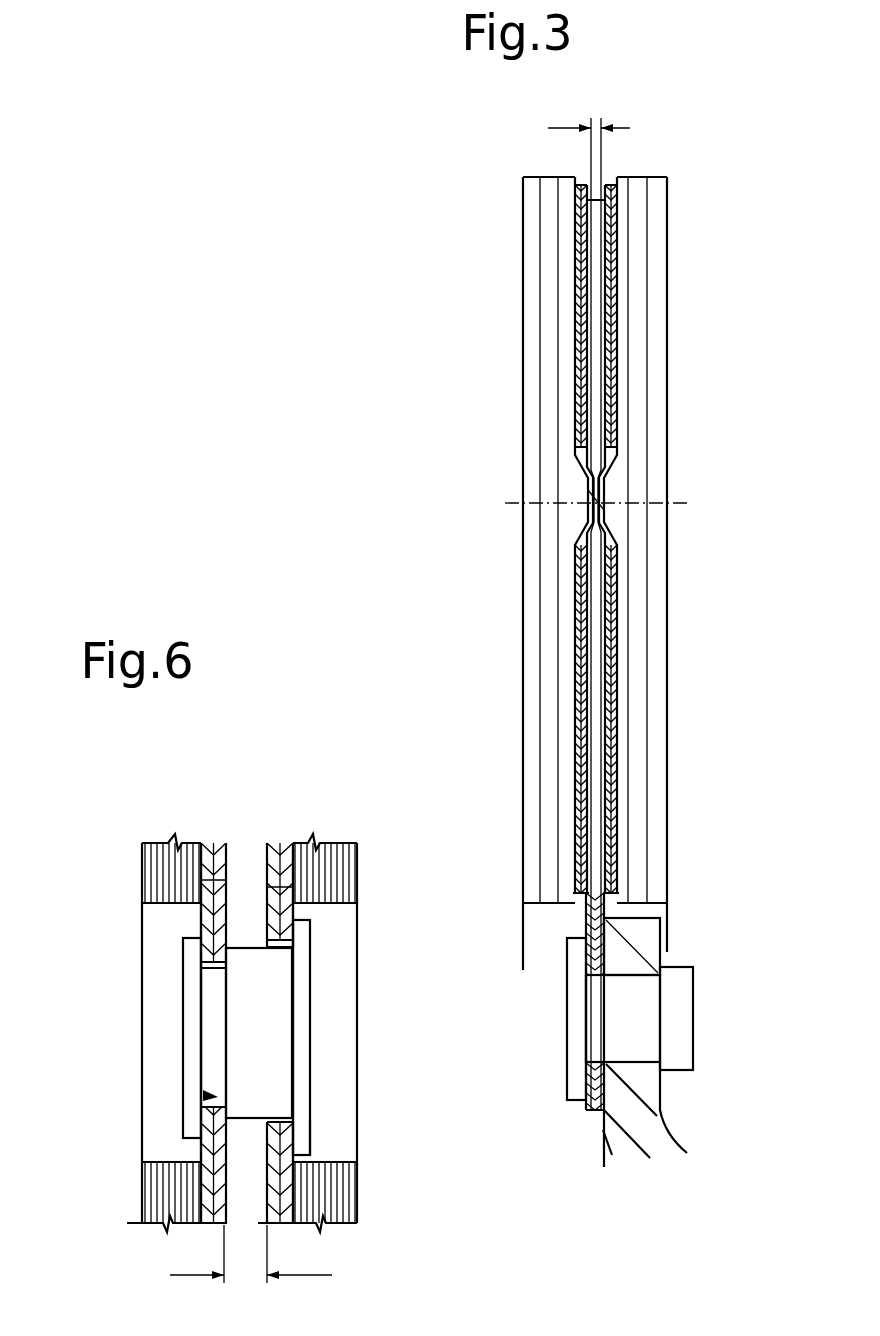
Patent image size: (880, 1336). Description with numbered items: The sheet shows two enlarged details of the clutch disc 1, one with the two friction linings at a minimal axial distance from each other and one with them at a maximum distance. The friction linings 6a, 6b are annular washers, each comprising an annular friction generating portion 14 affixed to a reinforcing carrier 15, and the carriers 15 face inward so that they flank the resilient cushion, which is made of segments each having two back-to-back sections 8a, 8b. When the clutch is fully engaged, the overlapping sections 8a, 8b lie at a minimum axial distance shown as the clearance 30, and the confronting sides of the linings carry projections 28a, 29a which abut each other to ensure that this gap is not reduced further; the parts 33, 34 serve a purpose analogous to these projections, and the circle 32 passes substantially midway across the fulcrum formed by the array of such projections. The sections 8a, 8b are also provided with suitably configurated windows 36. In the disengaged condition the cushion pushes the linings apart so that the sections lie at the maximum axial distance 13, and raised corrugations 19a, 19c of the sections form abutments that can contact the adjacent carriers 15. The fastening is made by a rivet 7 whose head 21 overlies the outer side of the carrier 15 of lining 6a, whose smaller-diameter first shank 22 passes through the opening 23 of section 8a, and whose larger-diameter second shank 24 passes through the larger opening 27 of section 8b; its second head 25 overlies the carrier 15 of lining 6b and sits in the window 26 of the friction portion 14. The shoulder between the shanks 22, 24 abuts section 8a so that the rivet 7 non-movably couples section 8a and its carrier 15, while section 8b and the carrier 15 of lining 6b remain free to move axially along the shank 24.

In FIG. 6, the clutch disc 1 is at (265, 752).
In FIG. 3, the friction lining 6a is at (532, 320).
In FIG. 6, the friction lining 6a is at (140, 1222).
In FIG. 3, the friction lining 6b is at (653, 342).
In FIG. 6, the friction lining 6b is at (337, 1177).
In FIG. 6, the rivet 7 is at (210, 1052).
In FIG. 3, the section 8a is at (583, 233).
In FIG. 6, the section 8a is at (217, 842).
In FIG. 3, the section 8b is at (607, 227).
In FIG. 6, the section 8b is at (273, 850).
In FIG. 6, the maximum axial distance 13 is at (251, 1254).
In FIG. 3, the annular friction generating portion 14 is at (540, 370).
In FIG. 6, the annular friction generating portion 14 is at (155, 858).
In FIG. 3, the reinforcing carrier 15 is at (578, 195).
In FIG. 6, the reinforcing carrier 15 is at (203, 880).
In FIG. 6, the corrugation 19a is at (223, 1208).
In FIG. 6, the corrugation 19c is at (273, 1202).
In FIG. 6, the head 21 is at (193, 953).
In FIG. 6, the first shank 22 is at (207, 997).
In FIG. 6, the opening 23 is at (203, 1093).
In FIG. 6, the second shank 24 is at (273, 1008).
In FIG. 6, the second head 25 is at (302, 1090).
In FIG. 6, the window 26 is at (337, 1143).
In FIG. 6, the opening 27 is at (278, 940).
In FIG. 3, the projection 28a is at (577, 512).
In FIG. 3, the projection 29a is at (607, 498).
In FIG. 3, the clearance 30 is at (583, 282).
In FIG. 3, the circle 32 is at (680, 505).
In FIG. 3, the projection 33 is at (583, 522).
In FIG. 3, the projection 34 is at (600, 518).
In FIG. 3, the window 36 is at (587, 452).